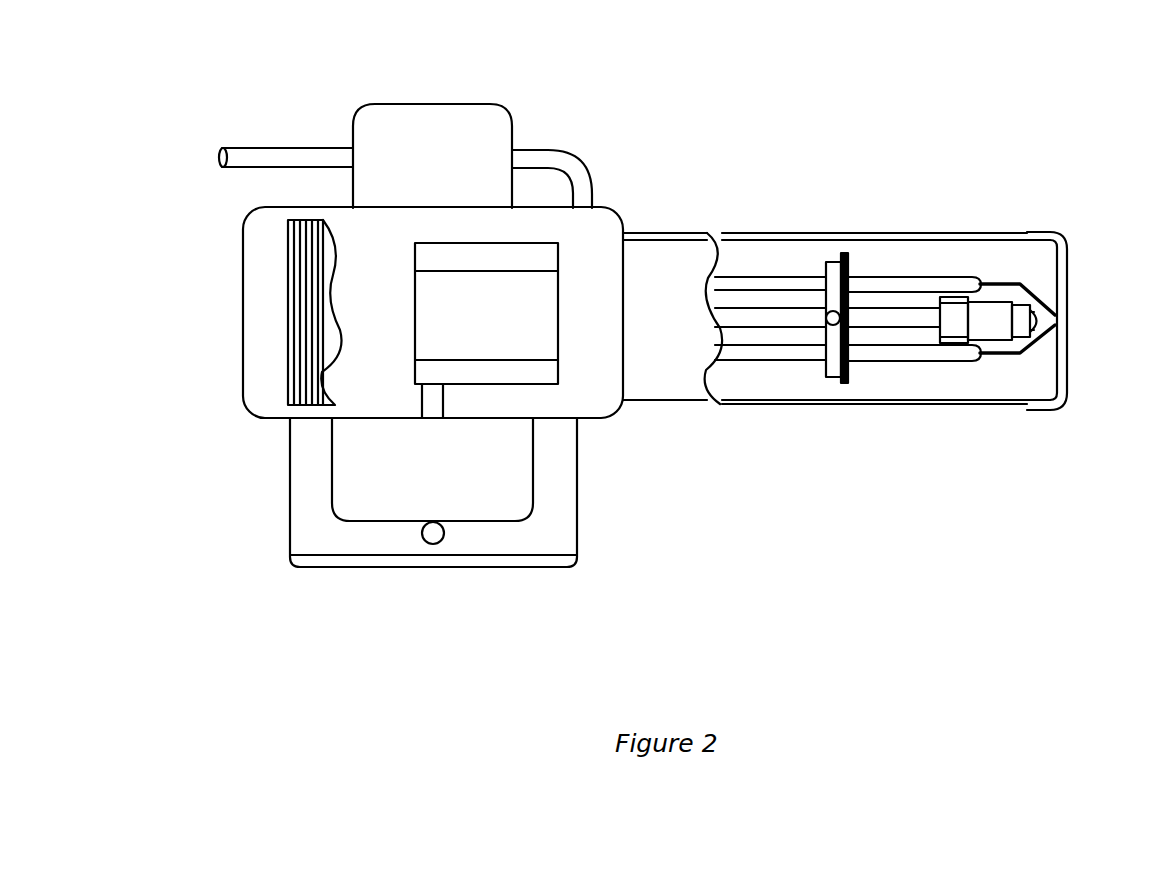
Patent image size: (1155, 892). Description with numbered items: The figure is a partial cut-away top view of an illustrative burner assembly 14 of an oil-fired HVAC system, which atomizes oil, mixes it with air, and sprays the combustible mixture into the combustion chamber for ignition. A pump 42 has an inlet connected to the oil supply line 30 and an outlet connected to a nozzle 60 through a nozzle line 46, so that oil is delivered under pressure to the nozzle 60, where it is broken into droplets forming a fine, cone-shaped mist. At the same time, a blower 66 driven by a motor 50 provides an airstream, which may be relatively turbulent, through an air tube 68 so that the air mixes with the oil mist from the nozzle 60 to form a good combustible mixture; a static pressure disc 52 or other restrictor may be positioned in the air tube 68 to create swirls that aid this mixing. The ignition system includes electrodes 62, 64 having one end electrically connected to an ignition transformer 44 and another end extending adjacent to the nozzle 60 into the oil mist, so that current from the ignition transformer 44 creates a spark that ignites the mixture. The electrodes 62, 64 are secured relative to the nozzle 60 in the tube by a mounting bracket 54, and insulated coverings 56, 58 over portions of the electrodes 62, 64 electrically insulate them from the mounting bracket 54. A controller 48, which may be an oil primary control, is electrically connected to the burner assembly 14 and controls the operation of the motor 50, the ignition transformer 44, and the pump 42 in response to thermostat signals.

The burner assembly 14 is at (790, 68).
The oil supply line 30 is at (285, 148).
The pump 42 is at (430, 104).
The ignition transformer 44 is at (560, 255).
The nozzle line 46 is at (576, 156).
The controller 48 is at (332, 477).
The motor 50 is at (322, 537).
The static pressure disc 52 is at (845, 252).
The mounting bracket 54 is at (831, 262).
The insulated covering 56 is at (942, 277).
The insulated covering 58 is at (940, 362).
The nozzle 60 is at (993, 302).
The electrode 62 is at (1040, 302).
The electrode 64 is at (1040, 340).
The blower 66 is at (300, 316).
The air tube 68 is at (867, 404).